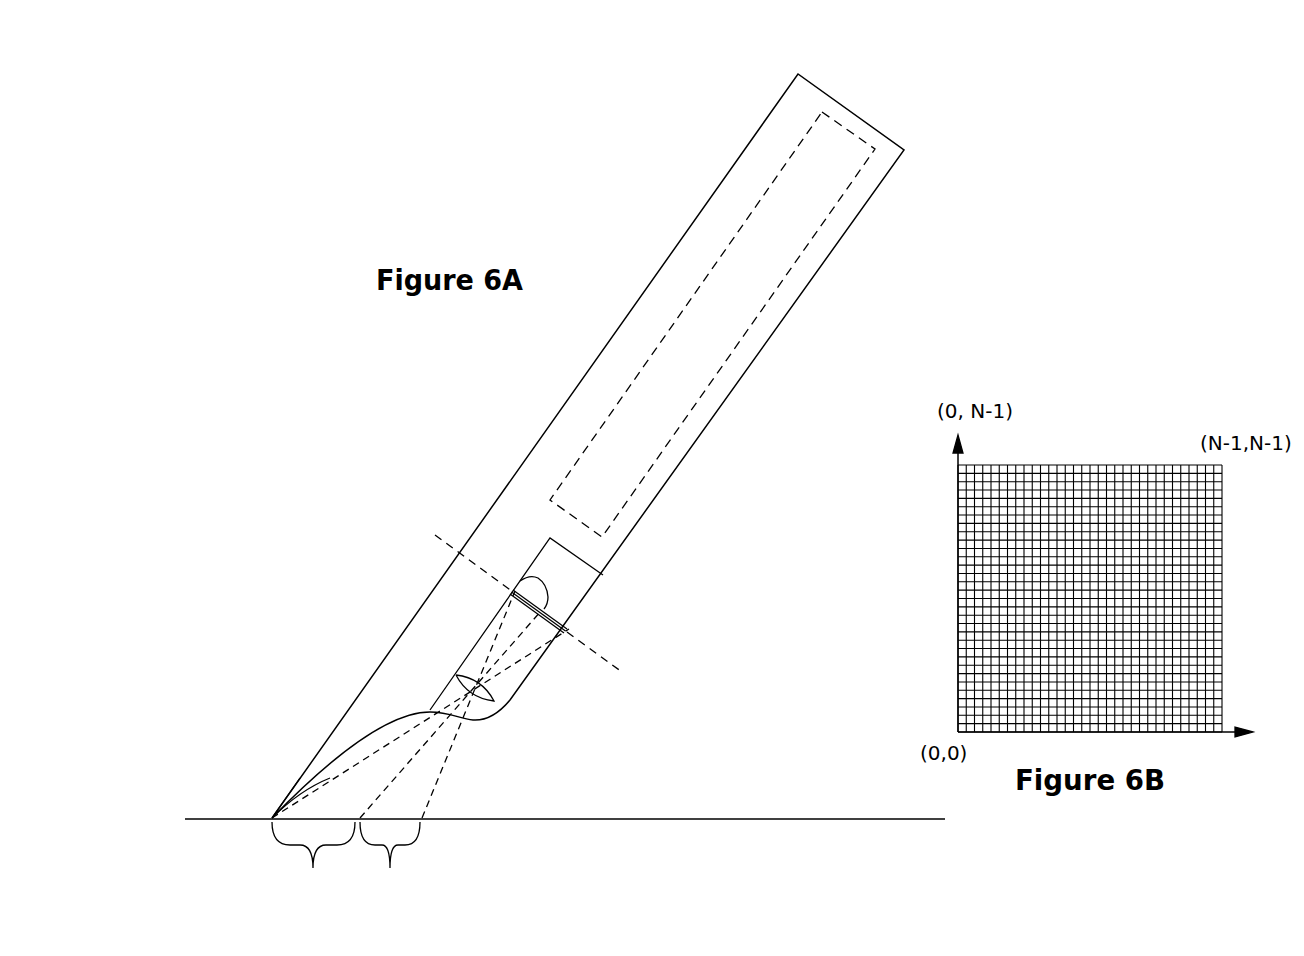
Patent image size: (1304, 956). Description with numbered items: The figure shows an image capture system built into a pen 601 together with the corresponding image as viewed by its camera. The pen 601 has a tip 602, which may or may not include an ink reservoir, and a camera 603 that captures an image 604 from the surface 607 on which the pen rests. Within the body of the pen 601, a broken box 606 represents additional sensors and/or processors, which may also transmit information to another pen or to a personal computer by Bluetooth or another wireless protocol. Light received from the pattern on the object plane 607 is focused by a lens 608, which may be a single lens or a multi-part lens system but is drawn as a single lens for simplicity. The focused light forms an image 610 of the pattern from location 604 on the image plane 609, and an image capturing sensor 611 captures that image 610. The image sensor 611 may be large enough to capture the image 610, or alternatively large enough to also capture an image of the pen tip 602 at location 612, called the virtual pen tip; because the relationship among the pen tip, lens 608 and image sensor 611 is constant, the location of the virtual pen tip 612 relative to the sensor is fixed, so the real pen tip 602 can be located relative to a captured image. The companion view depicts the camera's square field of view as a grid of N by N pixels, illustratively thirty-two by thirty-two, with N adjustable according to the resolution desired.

The pen 601 is at (430, 636).
The tip 602 is at (272, 818).
The camera 603 is at (557, 565).
The image 604 is at (346, 863).
The broken box 606 is at (712, 325).
The surface 607 is at (610, 819).
The lens 608 is at (490, 702).
The image plane 609 is at (628, 672).
The image 610 is at (545, 580).
The image capturing sensor 611 is at (549, 614).
The virtual pen tip location 612 is at (567, 629).